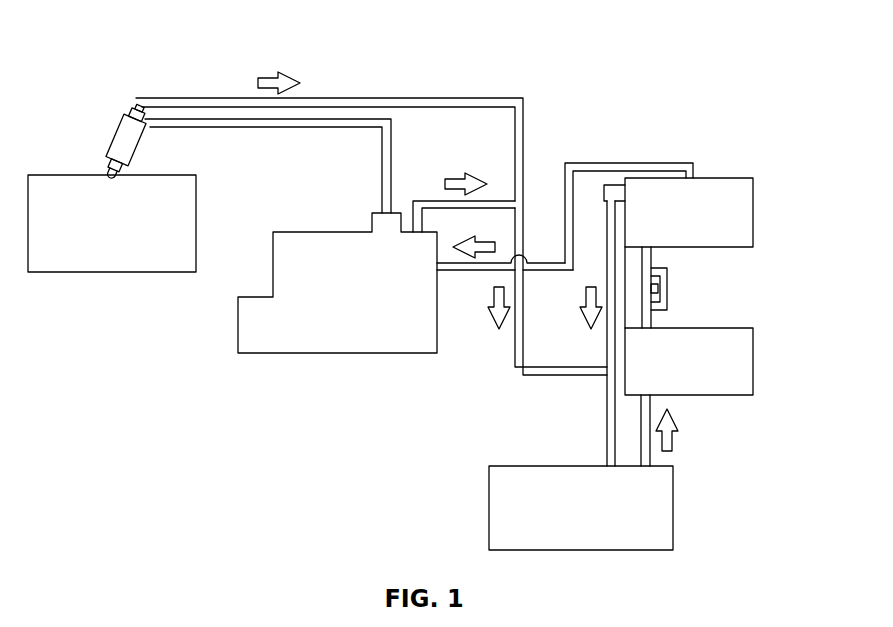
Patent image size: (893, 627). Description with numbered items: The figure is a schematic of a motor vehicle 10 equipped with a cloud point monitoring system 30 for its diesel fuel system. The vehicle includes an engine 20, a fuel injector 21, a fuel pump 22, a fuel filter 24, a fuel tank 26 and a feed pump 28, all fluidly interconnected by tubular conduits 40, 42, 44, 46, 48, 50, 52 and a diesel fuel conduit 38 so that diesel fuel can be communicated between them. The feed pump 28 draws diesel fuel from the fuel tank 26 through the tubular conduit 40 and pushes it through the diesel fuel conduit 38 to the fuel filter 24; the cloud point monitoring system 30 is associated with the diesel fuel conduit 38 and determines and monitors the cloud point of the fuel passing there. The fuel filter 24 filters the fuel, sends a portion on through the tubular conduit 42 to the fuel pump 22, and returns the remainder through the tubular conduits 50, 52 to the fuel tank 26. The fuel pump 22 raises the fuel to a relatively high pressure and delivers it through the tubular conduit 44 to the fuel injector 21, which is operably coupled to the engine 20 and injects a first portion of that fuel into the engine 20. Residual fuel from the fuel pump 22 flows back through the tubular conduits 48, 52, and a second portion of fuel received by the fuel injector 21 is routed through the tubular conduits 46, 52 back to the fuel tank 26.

The motor vehicle 10 is at (647, 63).
The engine 20 is at (112, 273).
The fuel injector 21 is at (113, 137).
The fuel pump 22 is at (338, 353).
The fuel filter 24 is at (754, 212).
The fuel tank 26 is at (489, 505).
The feed pump 28 is at (754, 361).
The cloud point monitoring system 30 is at (667, 285).
The diesel fuel conduit 38 is at (651, 323).
The tubular conduit 40 is at (657, 466).
The tubular conduit 42 is at (628, 163).
The tubular conduit 44 is at (290, 127).
The tubular conduit 46 is at (393, 98).
The tubular conduit 48 is at (427, 203).
The tubular conduit 50 is at (603, 278).
The tubular conduit 52 is at (607, 421).